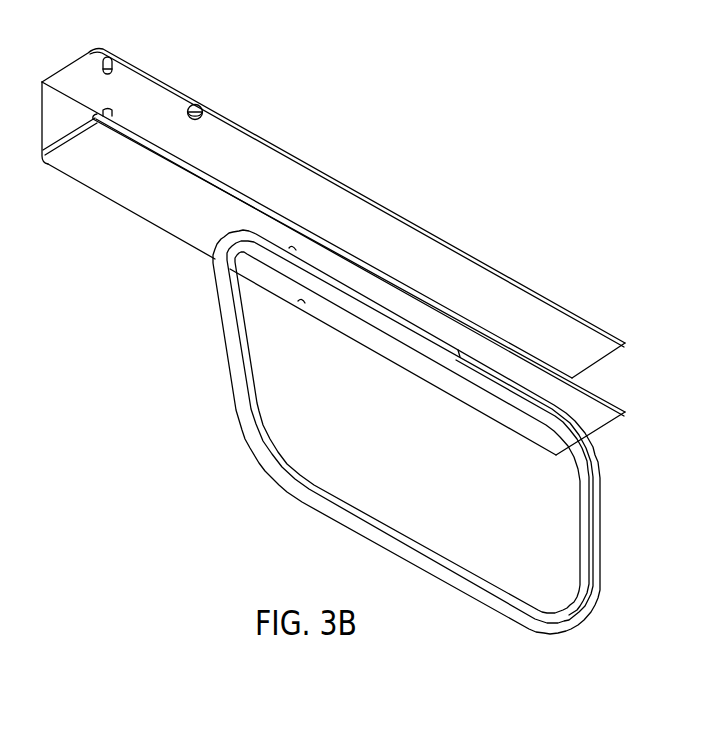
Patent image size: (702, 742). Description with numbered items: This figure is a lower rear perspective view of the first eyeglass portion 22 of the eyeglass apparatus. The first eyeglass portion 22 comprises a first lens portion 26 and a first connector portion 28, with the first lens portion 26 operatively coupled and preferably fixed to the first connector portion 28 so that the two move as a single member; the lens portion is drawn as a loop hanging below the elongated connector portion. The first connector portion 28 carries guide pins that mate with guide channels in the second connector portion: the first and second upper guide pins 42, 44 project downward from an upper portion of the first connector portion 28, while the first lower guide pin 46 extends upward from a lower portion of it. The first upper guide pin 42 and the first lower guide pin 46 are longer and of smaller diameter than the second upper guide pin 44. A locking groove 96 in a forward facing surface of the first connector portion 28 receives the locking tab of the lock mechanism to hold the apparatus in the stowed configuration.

The first eyeglass portion 22 is at (405, 170).
The first lens portion 26 is at (368, 540).
The first connector portion 28 is at (513, 272).
The first upper guide pin 42 is at (103, 62).
The second upper guide pin 44 is at (191, 104).
The first lower guide pin 46 is at (98, 112).
The locking groove 96 is at (301, 304).